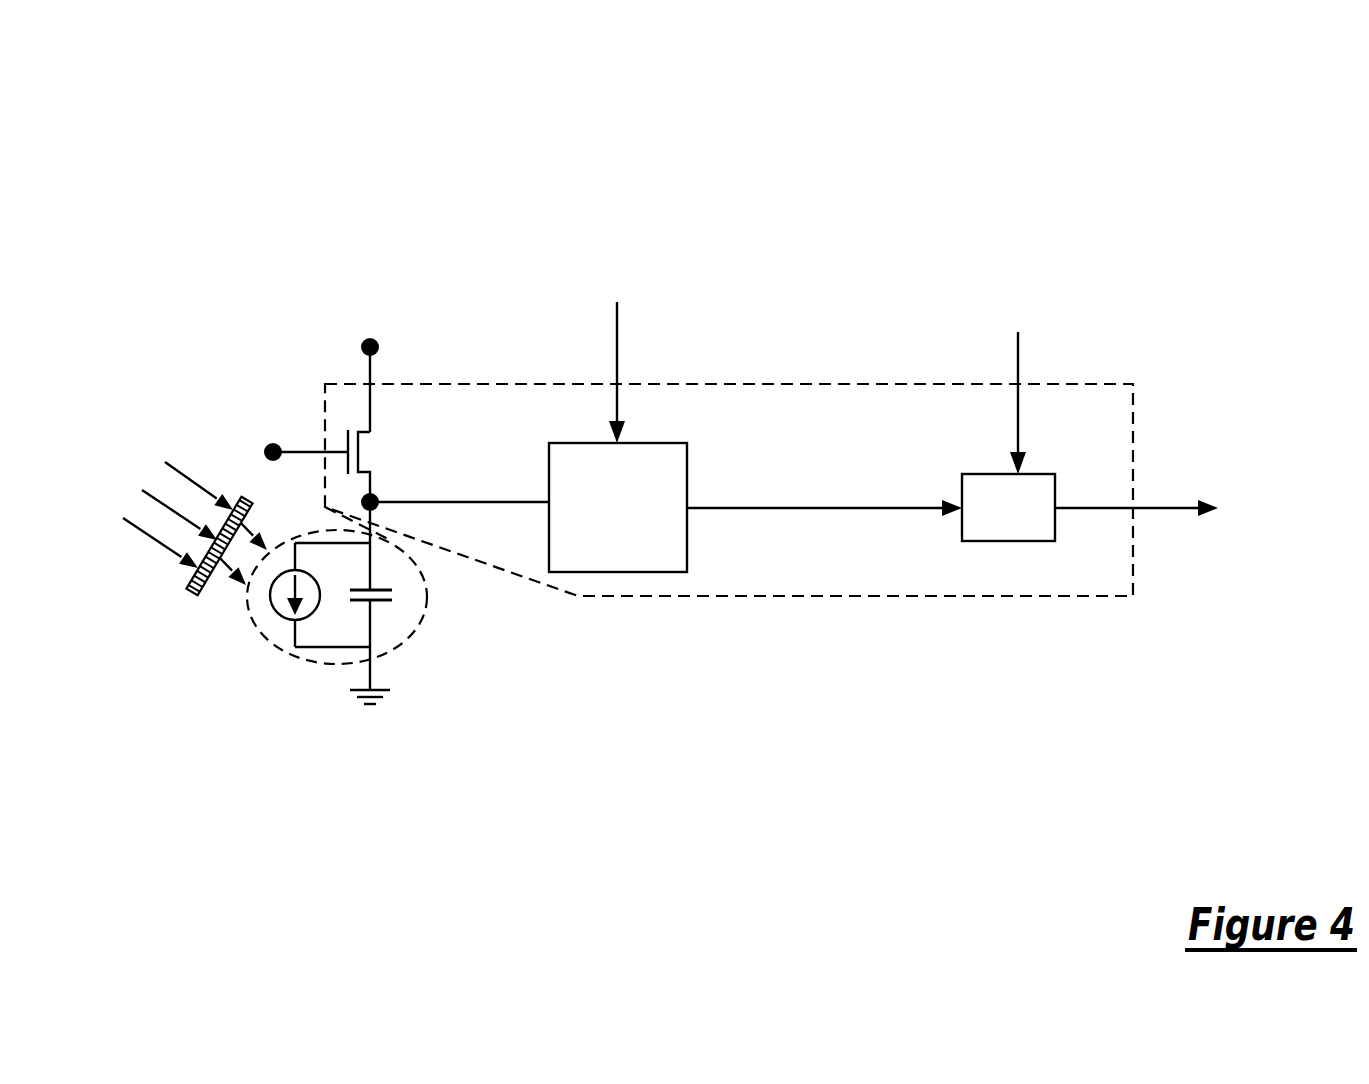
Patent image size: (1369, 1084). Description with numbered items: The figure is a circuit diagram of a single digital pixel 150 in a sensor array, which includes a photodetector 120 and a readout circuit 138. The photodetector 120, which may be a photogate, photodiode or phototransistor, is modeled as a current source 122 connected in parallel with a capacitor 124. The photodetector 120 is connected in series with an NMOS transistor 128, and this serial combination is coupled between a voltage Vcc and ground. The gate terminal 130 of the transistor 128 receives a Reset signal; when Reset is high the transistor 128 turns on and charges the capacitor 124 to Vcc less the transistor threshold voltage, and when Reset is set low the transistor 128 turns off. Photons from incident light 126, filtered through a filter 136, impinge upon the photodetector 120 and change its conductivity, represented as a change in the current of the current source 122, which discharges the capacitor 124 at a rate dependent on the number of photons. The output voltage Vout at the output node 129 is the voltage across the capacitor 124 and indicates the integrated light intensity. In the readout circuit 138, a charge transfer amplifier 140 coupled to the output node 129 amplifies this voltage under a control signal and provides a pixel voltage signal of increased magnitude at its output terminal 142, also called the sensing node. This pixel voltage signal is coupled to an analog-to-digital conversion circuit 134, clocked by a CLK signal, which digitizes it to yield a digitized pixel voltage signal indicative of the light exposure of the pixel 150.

The photodetector 120 is at (408, 637).
The current source 122 is at (282, 620).
The capacitor 124 is at (388, 604).
The incident light 126 is at (165, 463).
The NMOS transistor 128 is at (368, 431).
The output node 129 is at (382, 504).
The gate terminal 130 is at (265, 451).
The analog-to-digital conversion circuit 134 is at (1040, 473).
The filter 136 is at (190, 592).
The readout circuit 138 is at (828, 379).
The charge transfer amplifier 140 is at (668, 442).
The output terminal 142 is at (713, 510).
The digital pixel 150 is at (928, 214).